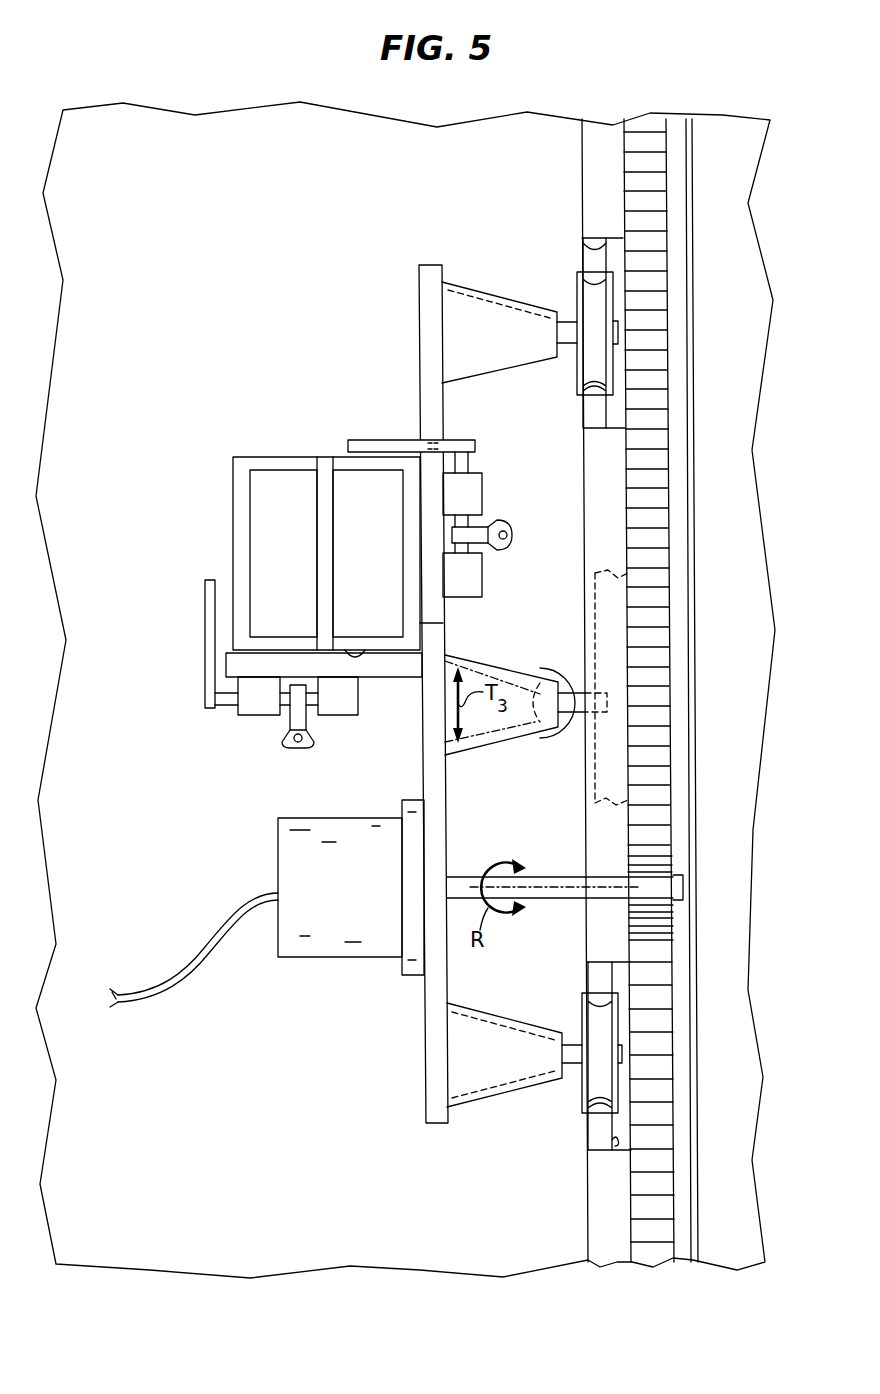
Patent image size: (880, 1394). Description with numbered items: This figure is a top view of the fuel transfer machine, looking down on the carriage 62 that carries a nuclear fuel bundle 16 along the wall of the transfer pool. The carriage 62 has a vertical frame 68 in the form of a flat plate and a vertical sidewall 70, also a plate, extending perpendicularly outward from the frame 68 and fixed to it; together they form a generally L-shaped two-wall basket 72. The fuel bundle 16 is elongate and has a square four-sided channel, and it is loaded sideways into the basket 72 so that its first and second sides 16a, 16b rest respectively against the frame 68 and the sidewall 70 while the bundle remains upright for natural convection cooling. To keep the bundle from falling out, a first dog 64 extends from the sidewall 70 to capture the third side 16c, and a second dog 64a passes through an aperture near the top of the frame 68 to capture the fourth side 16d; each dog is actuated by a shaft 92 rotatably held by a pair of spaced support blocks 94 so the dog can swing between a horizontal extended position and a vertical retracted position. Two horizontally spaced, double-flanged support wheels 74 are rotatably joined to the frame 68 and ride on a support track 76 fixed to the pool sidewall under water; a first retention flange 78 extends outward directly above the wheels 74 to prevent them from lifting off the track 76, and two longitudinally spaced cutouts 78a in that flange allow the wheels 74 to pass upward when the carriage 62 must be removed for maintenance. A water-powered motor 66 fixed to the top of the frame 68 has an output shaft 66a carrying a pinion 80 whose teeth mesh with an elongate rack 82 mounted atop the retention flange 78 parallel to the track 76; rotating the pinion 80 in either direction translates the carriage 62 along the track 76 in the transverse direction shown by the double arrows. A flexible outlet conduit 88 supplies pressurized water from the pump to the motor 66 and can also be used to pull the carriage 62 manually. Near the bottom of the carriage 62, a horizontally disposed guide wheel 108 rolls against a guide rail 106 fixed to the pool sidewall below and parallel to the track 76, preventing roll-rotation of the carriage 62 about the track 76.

The fuel bundle 16 is at (265, 450).
The first vertical side 16a is at (443, 623).
The second vertical side 16b is at (367, 650).
The third side 16c is at (233, 487).
The fourth side 16d is at (300, 457).
The carriage 62 is at (398, 1041).
The first dog 64 is at (205, 617).
The second dog 64a is at (390, 440).
The motor 66 is at (312, 957).
The output shaft 66a is at (573, 877).
The frame 68 is at (445, 830).
The sidewall 70 is at (402, 677).
The basket 72 is at (228, 650).
The support wheels 74 is at (575, 293).
The support track 76 is at (587, 1133).
The first retention flange 78 is at (595, 176).
The cutouts 78a is at (582, 252).
The pinion 80 is at (673, 855).
The rack 82 is at (660, 1003).
The outlet conduit 88 is at (178, 965).
The shaft 92 is at (473, 463).
The support blocks 94 is at (483, 577).
The guide rail 106 is at (592, 575).
The guide wheel 108 is at (563, 740).